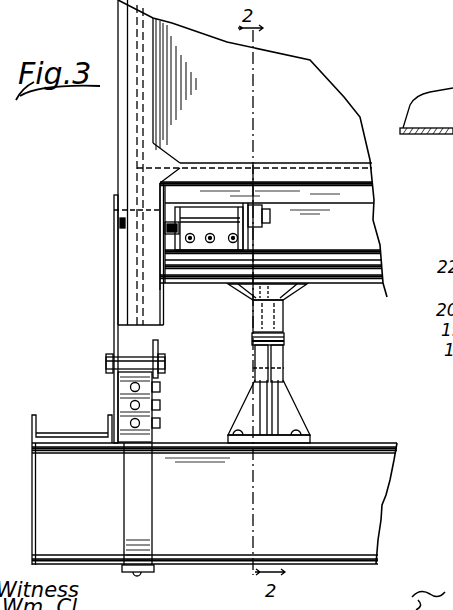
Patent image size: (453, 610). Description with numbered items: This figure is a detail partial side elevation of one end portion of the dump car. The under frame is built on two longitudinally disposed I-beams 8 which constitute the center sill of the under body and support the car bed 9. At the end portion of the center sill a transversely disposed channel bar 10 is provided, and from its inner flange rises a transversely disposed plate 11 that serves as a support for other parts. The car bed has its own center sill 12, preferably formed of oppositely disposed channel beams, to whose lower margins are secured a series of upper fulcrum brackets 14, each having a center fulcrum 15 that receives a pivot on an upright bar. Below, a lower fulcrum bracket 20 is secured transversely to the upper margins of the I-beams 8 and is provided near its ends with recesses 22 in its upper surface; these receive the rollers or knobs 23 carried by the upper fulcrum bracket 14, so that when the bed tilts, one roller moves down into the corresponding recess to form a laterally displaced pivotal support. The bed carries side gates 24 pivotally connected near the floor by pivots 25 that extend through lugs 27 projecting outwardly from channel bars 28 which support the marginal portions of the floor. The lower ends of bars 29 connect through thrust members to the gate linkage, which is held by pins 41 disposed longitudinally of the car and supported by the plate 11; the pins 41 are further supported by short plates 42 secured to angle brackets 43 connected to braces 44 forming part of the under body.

The I-beams 8 is at (36, 480).
The car bed 9 is at (374, 180).
The channel bars 10 is at (44, 434).
The plates 11 is at (114, 294).
The center sill 12 is at (377, 286).
The upper fulcrum brackets 14 is at (306, 292).
The center fulcrum 15 is at (285, 338).
The lower fulcrum brackets 20 is at (283, 415).
The recesses 22 is at (284, 368).
The rollers or knobs 23 is at (283, 314).
The side gates 24 is at (347, 113).
The pivots 25 is at (266, 218).
The lugs 27 is at (209, 232).
The channel bars 28 is at (375, 219).
The bars 29 is at (127, 135).
The pins 41 is at (108, 362).
The short plates 42 is at (158, 346).
The angle brackets 43 is at (160, 402).
The braces 44 is at (148, 468).